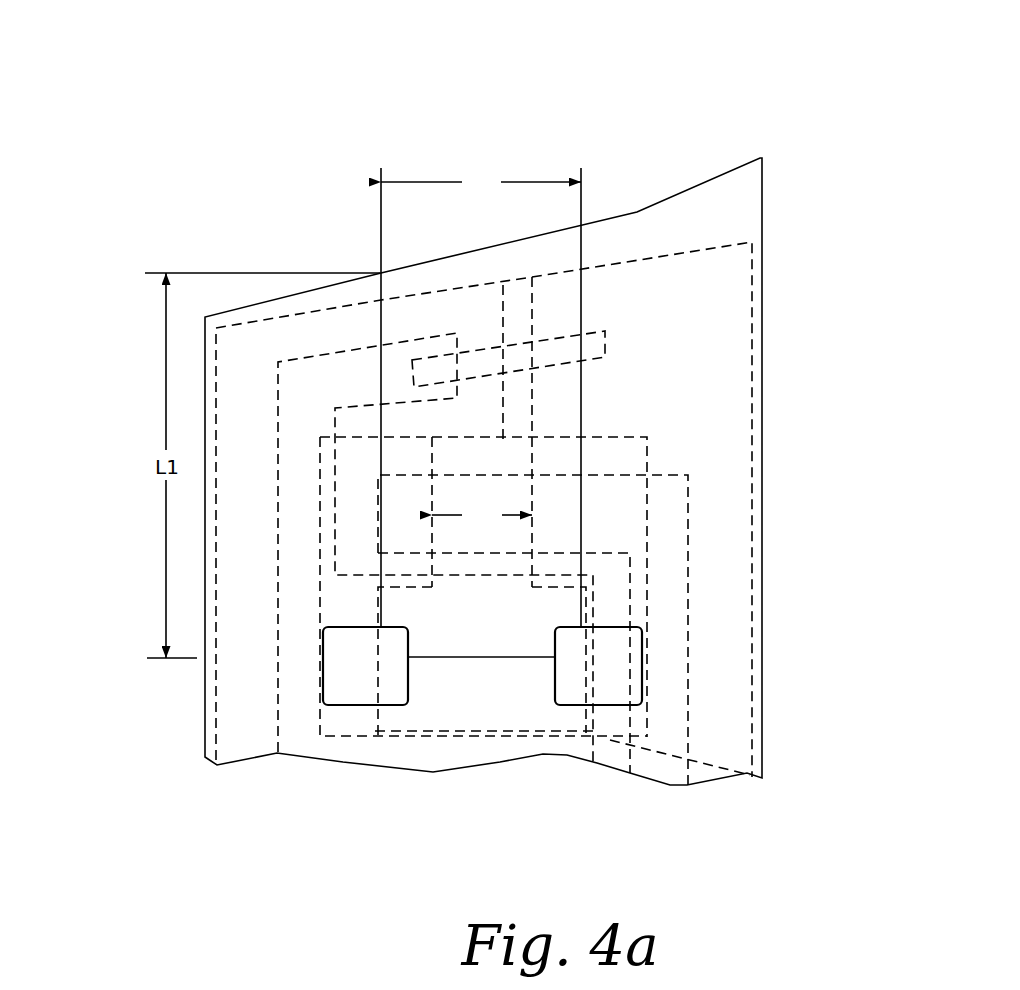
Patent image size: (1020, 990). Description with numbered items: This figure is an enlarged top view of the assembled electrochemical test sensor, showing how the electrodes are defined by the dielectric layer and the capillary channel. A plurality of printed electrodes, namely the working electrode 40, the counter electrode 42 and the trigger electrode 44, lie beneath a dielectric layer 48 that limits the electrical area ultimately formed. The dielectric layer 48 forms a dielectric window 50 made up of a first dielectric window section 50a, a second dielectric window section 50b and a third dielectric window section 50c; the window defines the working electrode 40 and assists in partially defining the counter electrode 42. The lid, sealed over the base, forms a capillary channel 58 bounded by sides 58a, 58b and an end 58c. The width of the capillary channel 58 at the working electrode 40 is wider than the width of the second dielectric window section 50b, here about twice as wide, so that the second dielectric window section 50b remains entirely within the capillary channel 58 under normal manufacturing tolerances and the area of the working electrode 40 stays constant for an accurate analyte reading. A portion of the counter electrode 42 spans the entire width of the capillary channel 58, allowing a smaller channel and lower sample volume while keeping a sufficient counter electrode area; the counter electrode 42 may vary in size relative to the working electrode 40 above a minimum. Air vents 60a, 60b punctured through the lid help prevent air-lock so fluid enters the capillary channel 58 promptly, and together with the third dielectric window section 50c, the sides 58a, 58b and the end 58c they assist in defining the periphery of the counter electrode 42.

The working electrode 40 is at (506, 494).
The counter electrode 42 is at (538, 613).
The trigger electrode 44 is at (520, 357).
The dielectric layer 48 is at (758, 277).
The dielectric window 50 is at (459, 423).
The first dielectric window section 50a is at (519, 400).
The second dielectric window section 50b is at (444, 445).
The third dielectric window section 50c is at (378, 606).
The capillary channel 58 is at (471, 441).
The side of the capillary channel 58a is at (581, 562).
The side of the capillary channel 58b is at (381, 564).
The end of the capillary channel 58c is at (452, 657).
The air vent 60a is at (607, 687).
The air vent 60b is at (343, 687).